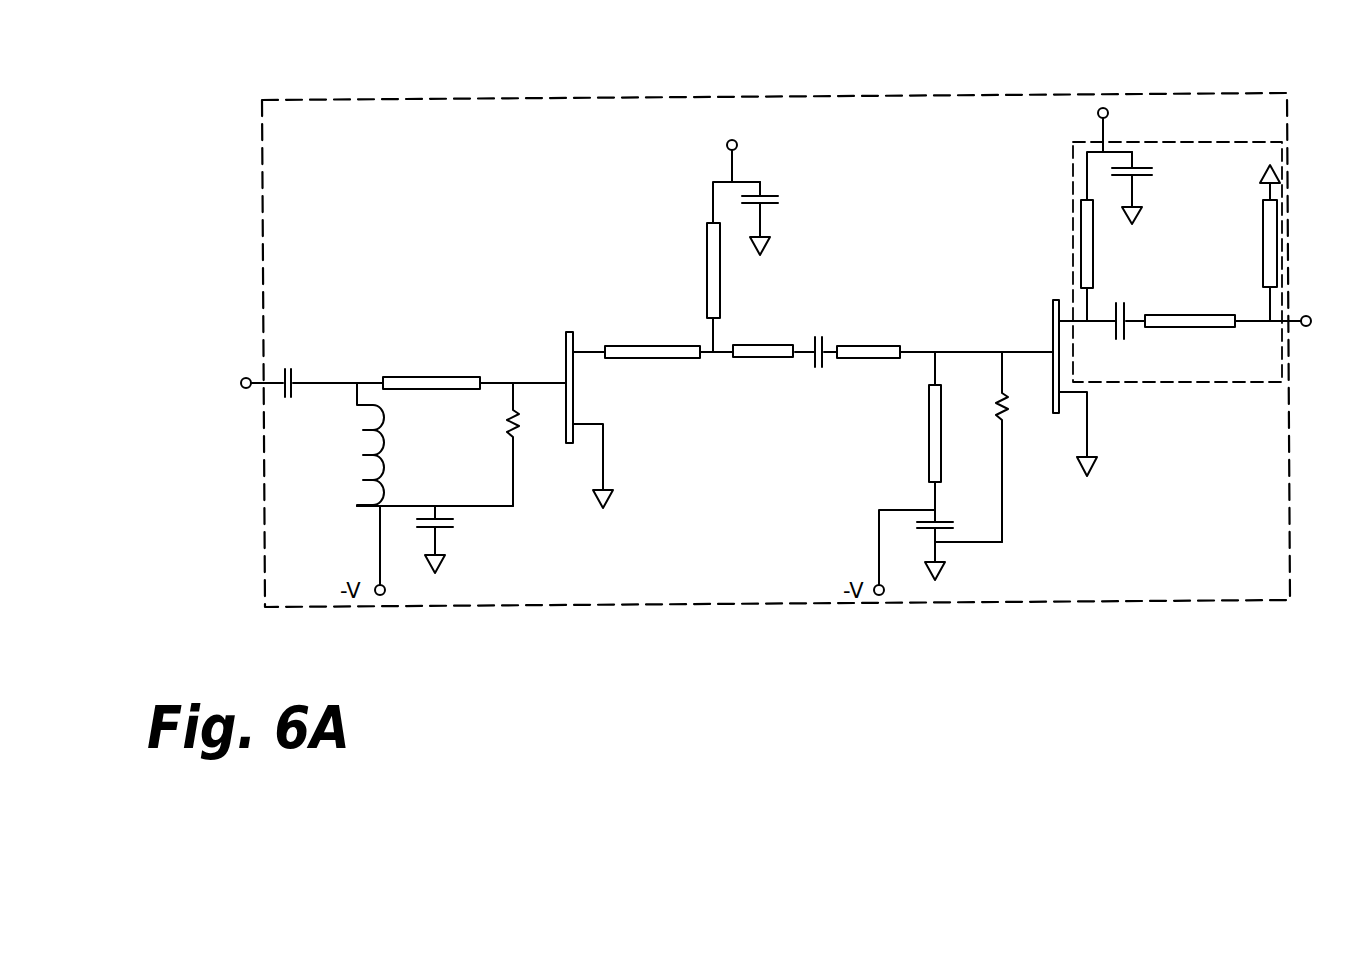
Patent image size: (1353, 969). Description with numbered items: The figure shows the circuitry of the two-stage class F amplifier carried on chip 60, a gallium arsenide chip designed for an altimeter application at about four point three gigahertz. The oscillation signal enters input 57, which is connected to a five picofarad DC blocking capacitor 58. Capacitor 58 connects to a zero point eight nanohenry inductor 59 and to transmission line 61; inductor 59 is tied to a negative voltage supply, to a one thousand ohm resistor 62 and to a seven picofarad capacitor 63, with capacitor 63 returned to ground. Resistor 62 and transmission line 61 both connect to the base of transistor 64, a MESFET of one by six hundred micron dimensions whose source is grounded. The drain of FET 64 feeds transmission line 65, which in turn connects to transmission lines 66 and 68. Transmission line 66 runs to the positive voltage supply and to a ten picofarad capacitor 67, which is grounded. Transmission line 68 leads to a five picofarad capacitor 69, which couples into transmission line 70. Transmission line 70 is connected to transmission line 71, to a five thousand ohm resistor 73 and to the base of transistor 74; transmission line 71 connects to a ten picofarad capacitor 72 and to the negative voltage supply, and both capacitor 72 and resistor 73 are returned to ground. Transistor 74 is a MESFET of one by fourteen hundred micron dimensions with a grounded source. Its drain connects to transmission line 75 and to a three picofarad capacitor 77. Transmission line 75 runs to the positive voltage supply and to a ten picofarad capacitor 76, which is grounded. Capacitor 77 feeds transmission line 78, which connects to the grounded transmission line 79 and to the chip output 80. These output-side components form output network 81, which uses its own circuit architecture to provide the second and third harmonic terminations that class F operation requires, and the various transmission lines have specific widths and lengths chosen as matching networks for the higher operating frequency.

The input 57 is at (241, 383).
The DC blocking capacitor 58 is at (295, 393).
The inductor 59 is at (352, 482).
The chip 60 is at (1030, 92).
The transmission line 61 is at (480, 375).
The resistor 62 is at (505, 438).
The capacitor 63 is at (432, 527).
The transistor 64 is at (568, 331).
The transmission line 65 is at (702, 357).
The transmission line 66 is at (721, 291).
The capacitor 67 is at (780, 205).
The transmission line 68 is at (798, 357).
The capacitor 69 is at (823, 337).
The transmission line 70 is at (900, 340).
The transmission line 71 is at (925, 458).
The capacitor 72 is at (930, 528).
The resistor 73 is at (1000, 405).
The transistor 74 is at (1055, 300).
The transmission line 75 is at (1094, 265).
The capacitor 76 is at (1145, 167).
The capacitor 77 is at (1122, 303).
The transmission line 78 is at (1196, 313).
The transmission line 79 is at (1280, 212).
The output 80 is at (1310, 327).
The output network 81 is at (1072, 155).